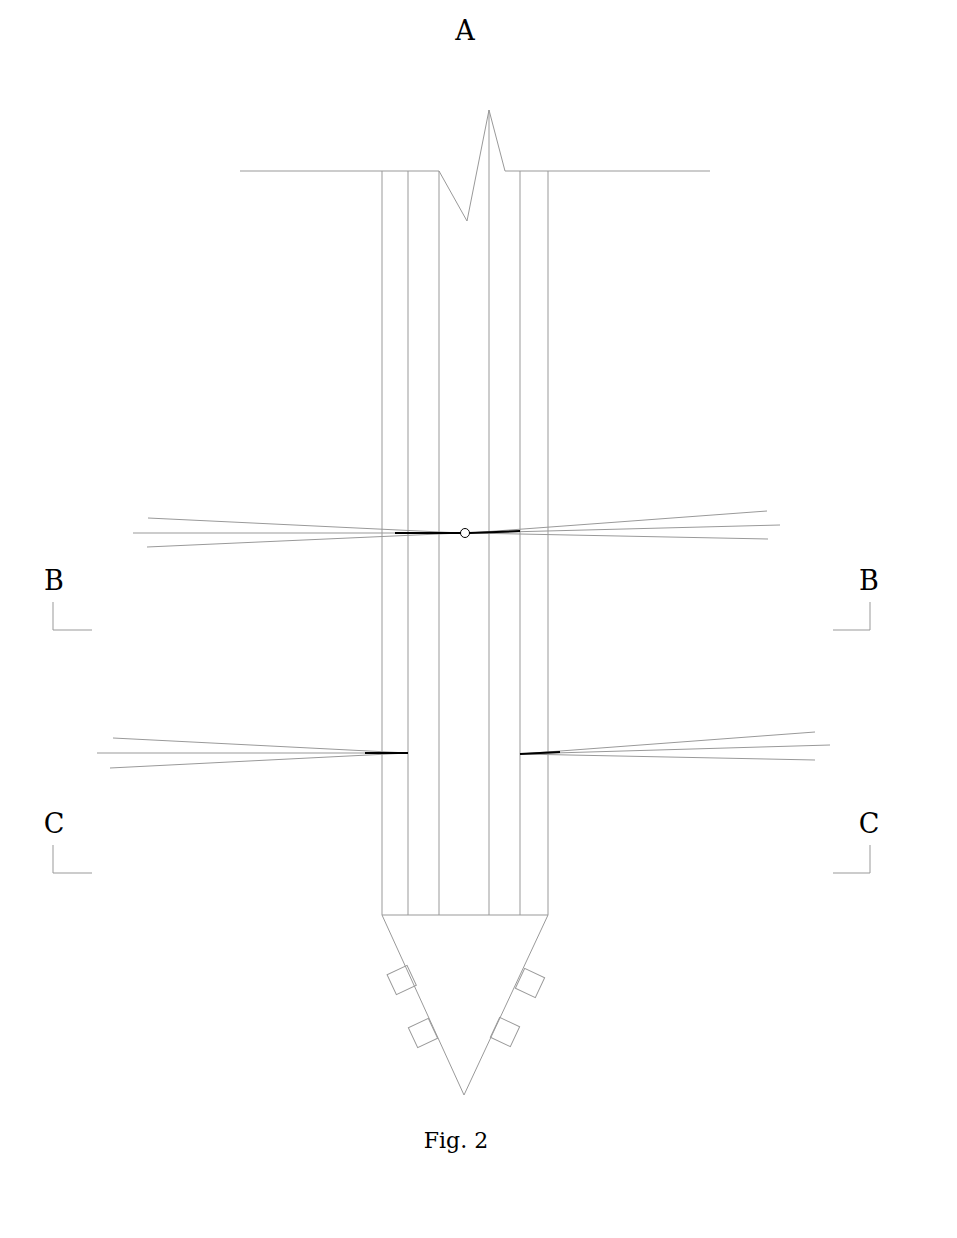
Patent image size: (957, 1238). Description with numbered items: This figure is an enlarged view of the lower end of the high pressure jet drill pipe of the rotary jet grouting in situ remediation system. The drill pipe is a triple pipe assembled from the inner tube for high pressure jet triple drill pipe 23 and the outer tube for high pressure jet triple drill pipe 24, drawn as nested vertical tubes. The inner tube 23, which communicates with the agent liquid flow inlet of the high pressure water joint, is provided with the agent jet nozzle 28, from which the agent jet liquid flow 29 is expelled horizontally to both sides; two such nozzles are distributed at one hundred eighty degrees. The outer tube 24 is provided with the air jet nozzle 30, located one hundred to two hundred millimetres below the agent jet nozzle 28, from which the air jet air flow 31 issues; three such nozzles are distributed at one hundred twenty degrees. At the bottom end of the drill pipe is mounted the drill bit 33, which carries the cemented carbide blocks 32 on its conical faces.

The inner tube for high pressure jet triple drill pipe 23 is at (463, 351).
The outer tube for high pressure jet triple drill pipe 24 is at (530, 418).
The agent jet nozzle 28 is at (461, 531).
The agent jet liquid flow 29 is at (675, 517).
The air jet nozzle 30 is at (548, 752).
The air jet air flow 31 is at (738, 737).
The cemented carbide block 32 is at (527, 969).
The drill bit 33 is at (460, 1047).